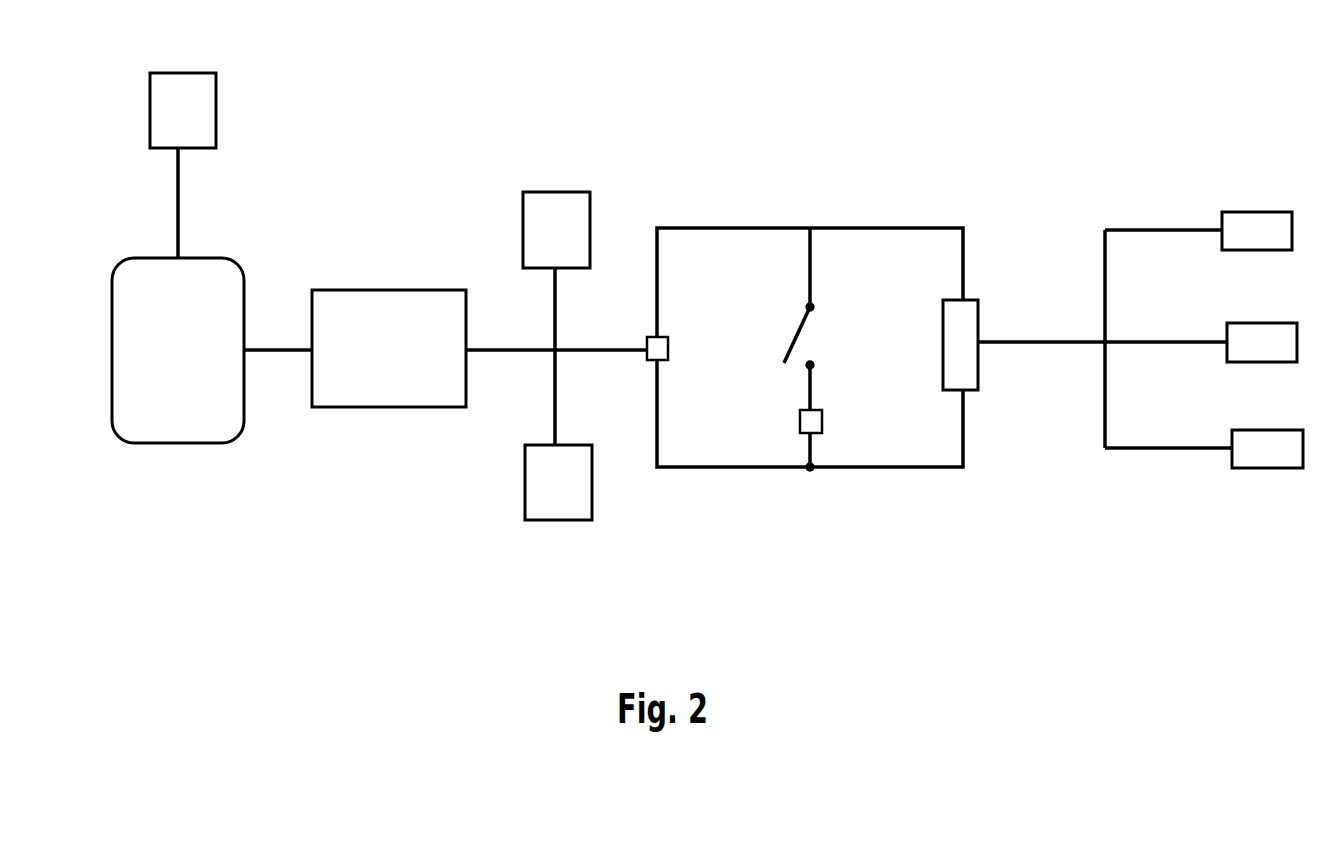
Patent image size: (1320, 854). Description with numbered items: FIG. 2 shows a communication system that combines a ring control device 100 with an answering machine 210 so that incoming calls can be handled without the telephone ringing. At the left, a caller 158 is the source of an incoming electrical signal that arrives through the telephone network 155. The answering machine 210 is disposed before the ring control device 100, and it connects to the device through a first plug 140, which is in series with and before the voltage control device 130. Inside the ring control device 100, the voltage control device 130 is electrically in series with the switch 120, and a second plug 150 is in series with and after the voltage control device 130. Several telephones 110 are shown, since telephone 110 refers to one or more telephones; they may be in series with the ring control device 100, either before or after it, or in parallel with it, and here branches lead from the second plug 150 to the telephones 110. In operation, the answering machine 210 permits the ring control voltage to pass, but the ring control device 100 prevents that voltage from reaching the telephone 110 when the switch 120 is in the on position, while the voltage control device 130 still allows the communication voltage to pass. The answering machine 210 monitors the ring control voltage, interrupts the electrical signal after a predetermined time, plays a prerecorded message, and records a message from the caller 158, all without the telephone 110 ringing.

The ring control device 100 is at (780, 225).
The telephone 110 is at (577, 190).
The switch 120 is at (793, 340).
The voltage control device 130 is at (800, 415).
The first plug 140 is at (660, 345).
The second plug 150 is at (975, 315).
The telephone network 155 is at (122, 285).
The caller 158 is at (163, 130).
The answering machine 210 is at (352, 297).